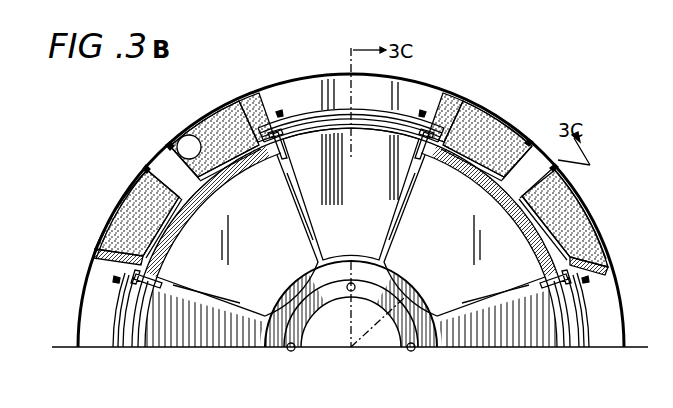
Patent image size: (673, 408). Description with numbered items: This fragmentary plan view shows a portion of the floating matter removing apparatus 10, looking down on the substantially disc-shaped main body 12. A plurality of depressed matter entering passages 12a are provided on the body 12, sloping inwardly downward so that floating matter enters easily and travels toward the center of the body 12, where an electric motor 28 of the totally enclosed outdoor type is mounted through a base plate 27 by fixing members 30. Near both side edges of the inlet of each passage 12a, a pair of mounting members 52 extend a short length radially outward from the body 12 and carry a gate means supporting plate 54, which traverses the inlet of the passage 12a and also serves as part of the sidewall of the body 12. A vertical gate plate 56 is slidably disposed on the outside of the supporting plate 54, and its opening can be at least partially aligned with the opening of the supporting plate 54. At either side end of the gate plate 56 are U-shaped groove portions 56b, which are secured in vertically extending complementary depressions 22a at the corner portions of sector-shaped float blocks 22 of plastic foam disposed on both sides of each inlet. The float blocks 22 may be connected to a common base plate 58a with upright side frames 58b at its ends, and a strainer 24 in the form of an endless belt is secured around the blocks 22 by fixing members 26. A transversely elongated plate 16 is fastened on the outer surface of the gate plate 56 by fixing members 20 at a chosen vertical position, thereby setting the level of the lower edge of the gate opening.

The floating matter removing apparatus 10 is at (124, 181).
The main body 12 is at (290, 198).
The matter entering passage 12a is at (405, 204).
The transversely elongated plate 16 is at (392, 114).
The fixing member 20 is at (281, 110).
The float block 22 is at (238, 108).
The depression 22a is at (266, 92).
The strainer 24 is at (208, 128).
The fixing member 26 is at (147, 167).
The base plate 27 is at (396, 270).
The electric motor 28 is at (336, 340).
The fixing member 30 is at (352, 284).
The mounting member 52 is at (280, 170).
The gate means supporting plate 54 is at (363, 123).
The gate plate 56 is at (346, 117).
The groove portion 56b is at (116, 200).
The common base plate 58a is at (306, 90).
The upright side frame 58b is at (185, 140).